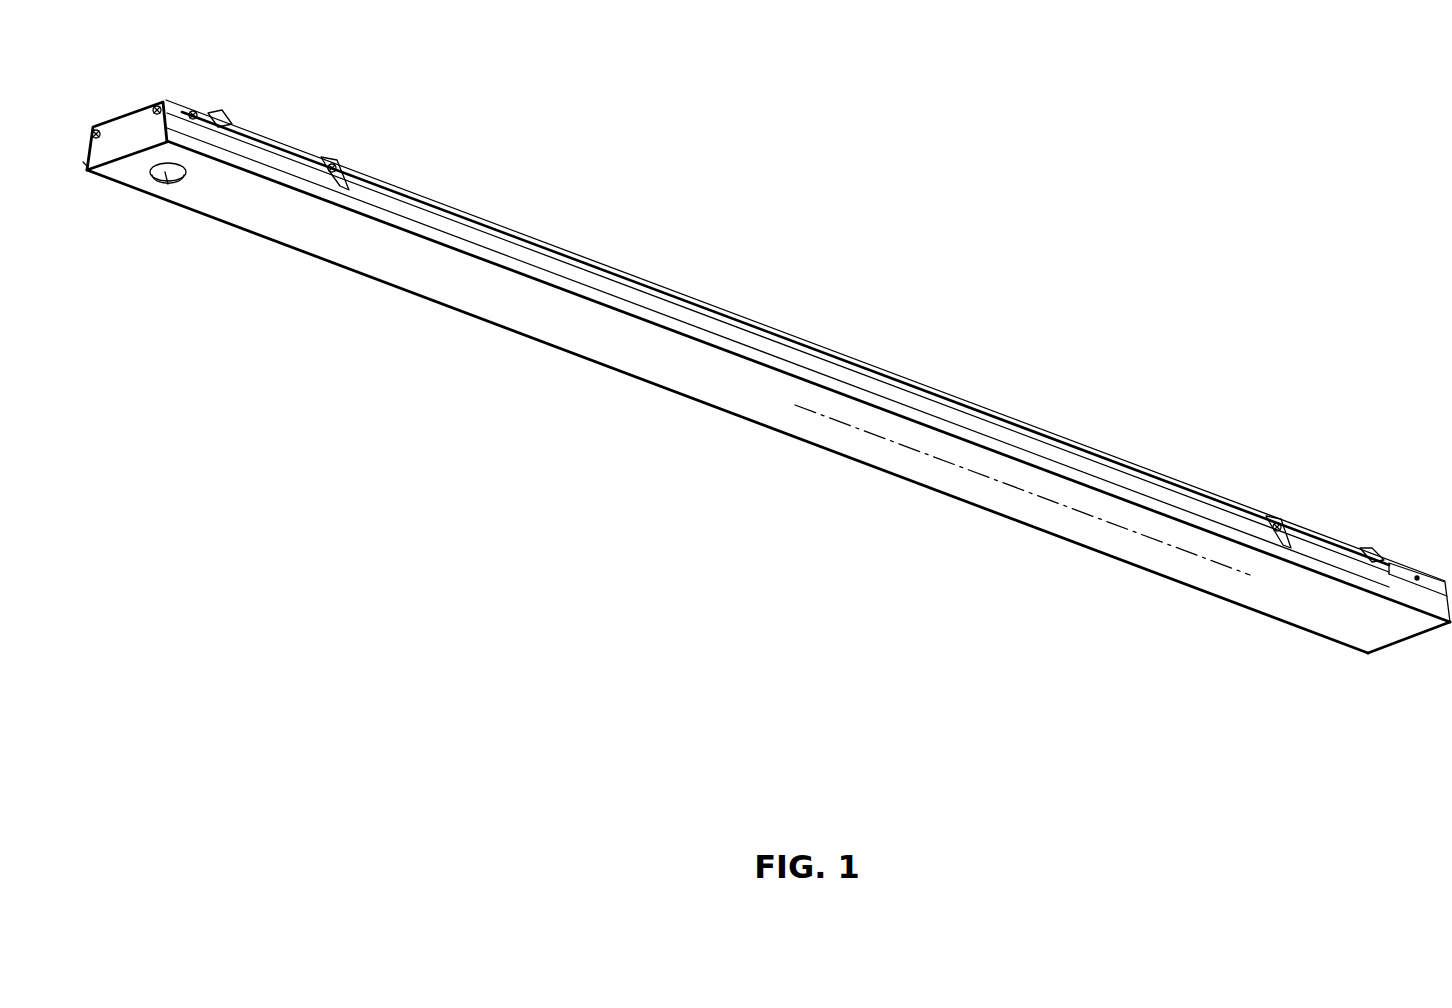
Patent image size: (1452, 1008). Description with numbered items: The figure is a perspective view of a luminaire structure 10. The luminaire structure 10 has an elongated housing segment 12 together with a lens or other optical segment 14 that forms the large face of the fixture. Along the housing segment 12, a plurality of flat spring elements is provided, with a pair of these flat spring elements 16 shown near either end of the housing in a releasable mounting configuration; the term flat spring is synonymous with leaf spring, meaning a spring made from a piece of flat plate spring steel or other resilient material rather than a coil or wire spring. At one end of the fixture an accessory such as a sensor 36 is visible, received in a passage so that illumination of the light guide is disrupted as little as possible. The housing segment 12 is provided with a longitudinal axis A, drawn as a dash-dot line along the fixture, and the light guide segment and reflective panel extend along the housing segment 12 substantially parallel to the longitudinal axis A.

The luminaire structure 10 is at (766, 350).
The housing segment 12 is at (878, 326).
The lens or other optical segment 14 is at (368, 426).
The flat spring elements 16 is at (371, 165).
The sensor 36 is at (157, 195).
The longitudinal axis A is at (1002, 486).